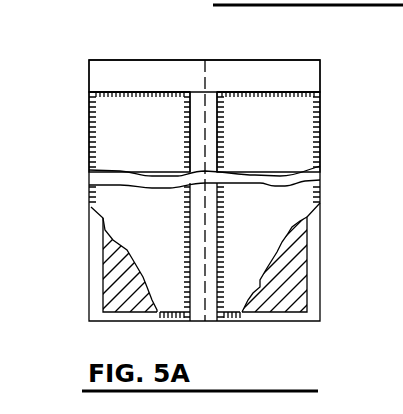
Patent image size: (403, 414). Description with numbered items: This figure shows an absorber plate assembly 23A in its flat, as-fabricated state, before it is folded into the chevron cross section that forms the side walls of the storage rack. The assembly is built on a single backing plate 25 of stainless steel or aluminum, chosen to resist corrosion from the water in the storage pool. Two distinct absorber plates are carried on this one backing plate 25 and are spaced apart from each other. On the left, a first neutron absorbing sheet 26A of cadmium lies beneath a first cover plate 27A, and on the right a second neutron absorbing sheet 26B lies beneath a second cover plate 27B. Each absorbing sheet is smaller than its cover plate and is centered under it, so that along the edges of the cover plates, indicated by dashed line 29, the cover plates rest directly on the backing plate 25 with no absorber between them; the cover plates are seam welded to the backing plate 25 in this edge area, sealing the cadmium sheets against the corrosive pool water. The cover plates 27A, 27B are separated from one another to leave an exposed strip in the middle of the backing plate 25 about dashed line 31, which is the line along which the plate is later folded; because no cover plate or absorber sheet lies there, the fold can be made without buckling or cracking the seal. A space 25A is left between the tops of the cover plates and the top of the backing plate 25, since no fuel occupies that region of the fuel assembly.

The absorber plate assembly 23A is at (44, 15).
The backing plate 25 is at (208, 100).
The space 25A is at (300, 73).
The first neutron absorbing sheet 26A is at (110, 285).
The second neutron absorbing sheet 26B is at (293, 273).
The first cover plate 27A is at (113, 128).
The second cover plate 27B is at (282, 140).
The dashed line 29 is at (188, 112).
The dashed line 31 is at (206, 68).